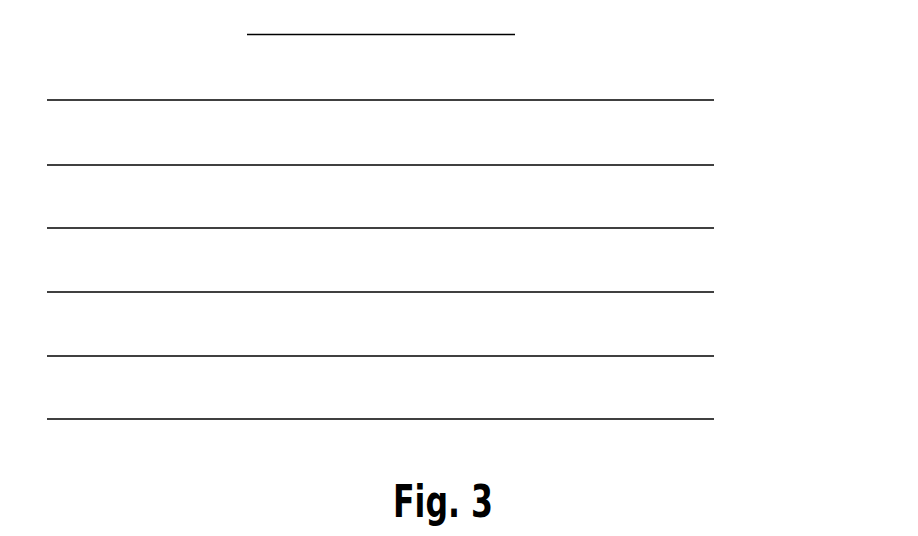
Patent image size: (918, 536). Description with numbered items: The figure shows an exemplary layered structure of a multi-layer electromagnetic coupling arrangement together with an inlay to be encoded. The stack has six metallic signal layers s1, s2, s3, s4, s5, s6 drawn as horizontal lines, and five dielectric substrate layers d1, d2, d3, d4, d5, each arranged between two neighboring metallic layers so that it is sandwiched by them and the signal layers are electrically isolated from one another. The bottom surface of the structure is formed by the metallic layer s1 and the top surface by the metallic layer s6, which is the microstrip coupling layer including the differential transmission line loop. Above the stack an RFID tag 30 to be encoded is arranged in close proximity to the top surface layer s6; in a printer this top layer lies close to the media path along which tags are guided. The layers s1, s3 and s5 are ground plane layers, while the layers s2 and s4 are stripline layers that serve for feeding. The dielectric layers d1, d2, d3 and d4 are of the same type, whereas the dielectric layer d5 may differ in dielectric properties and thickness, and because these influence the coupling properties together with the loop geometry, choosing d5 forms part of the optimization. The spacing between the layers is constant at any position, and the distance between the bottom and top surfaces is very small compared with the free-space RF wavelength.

The RFID tag 30 is at (411, 39).
The metallic signal layer s1 is at (426, 415).
The metallic signal layer s2 is at (426, 352).
The metallic signal layer s3 is at (426, 288).
The metallic signal layer s4 is at (426, 224).
The metallic signal layer s5 is at (426, 159).
The top surface layer s6 is at (426, 93).
The dielectric substrate layer d1 is at (380, 387).
The dielectric substrate layer d2 is at (380, 324).
The dielectric substrate layer d3 is at (380, 260).
The dielectric substrate layer d4 is at (380, 196).
The dielectric substrate layer d5 is at (380, 132).